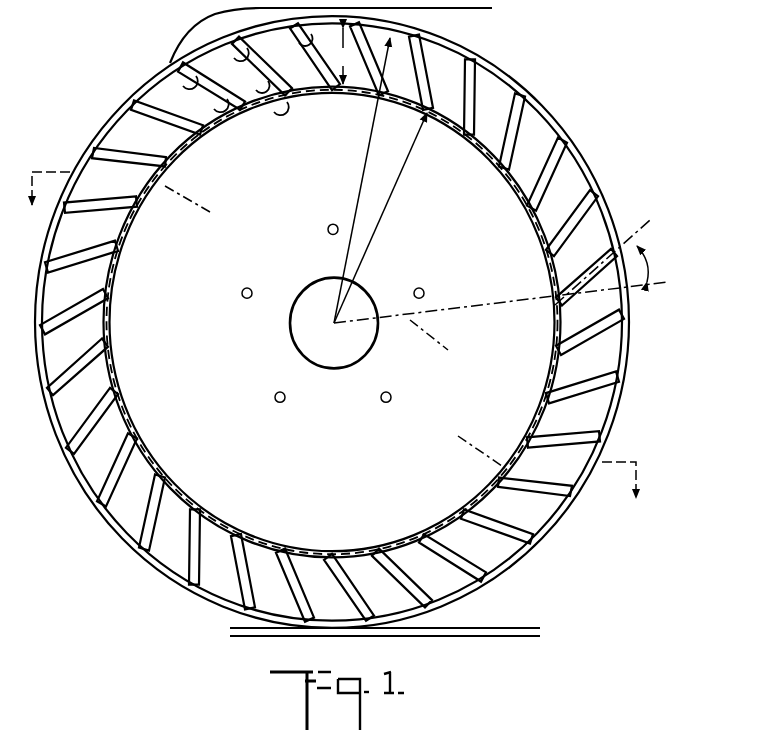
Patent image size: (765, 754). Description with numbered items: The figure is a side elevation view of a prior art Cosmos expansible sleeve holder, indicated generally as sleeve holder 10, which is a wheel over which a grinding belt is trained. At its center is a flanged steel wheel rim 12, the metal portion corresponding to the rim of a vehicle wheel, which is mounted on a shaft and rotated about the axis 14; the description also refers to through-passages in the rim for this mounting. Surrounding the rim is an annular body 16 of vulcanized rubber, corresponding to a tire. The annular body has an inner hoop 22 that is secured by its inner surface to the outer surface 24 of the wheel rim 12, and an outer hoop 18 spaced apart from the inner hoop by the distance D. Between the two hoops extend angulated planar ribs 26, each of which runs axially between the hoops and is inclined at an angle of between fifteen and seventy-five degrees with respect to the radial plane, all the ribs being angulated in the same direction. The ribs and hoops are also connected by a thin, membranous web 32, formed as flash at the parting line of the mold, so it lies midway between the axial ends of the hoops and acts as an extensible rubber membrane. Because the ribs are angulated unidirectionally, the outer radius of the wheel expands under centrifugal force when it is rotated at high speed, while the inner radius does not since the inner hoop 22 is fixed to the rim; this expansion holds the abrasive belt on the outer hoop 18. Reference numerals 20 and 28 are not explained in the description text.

The expansible sleeve holder 10 is at (573, 112).
The wheel rim 12 is at (343, 450).
The axis 14 is at (322, 330).
The annular body 16 is at (578, 140).
The outer hoop 18 is at (580, 165).
The blade outer end 20 is at (602, 193).
The inner hoop 22 is at (487, 97).
The outer surface 24 is at (530, 200).
The angulated planar ribs 26 is at (270, 33).
The cutter detail 28 is at (278, 100).
The web 32 is at (448, 78).